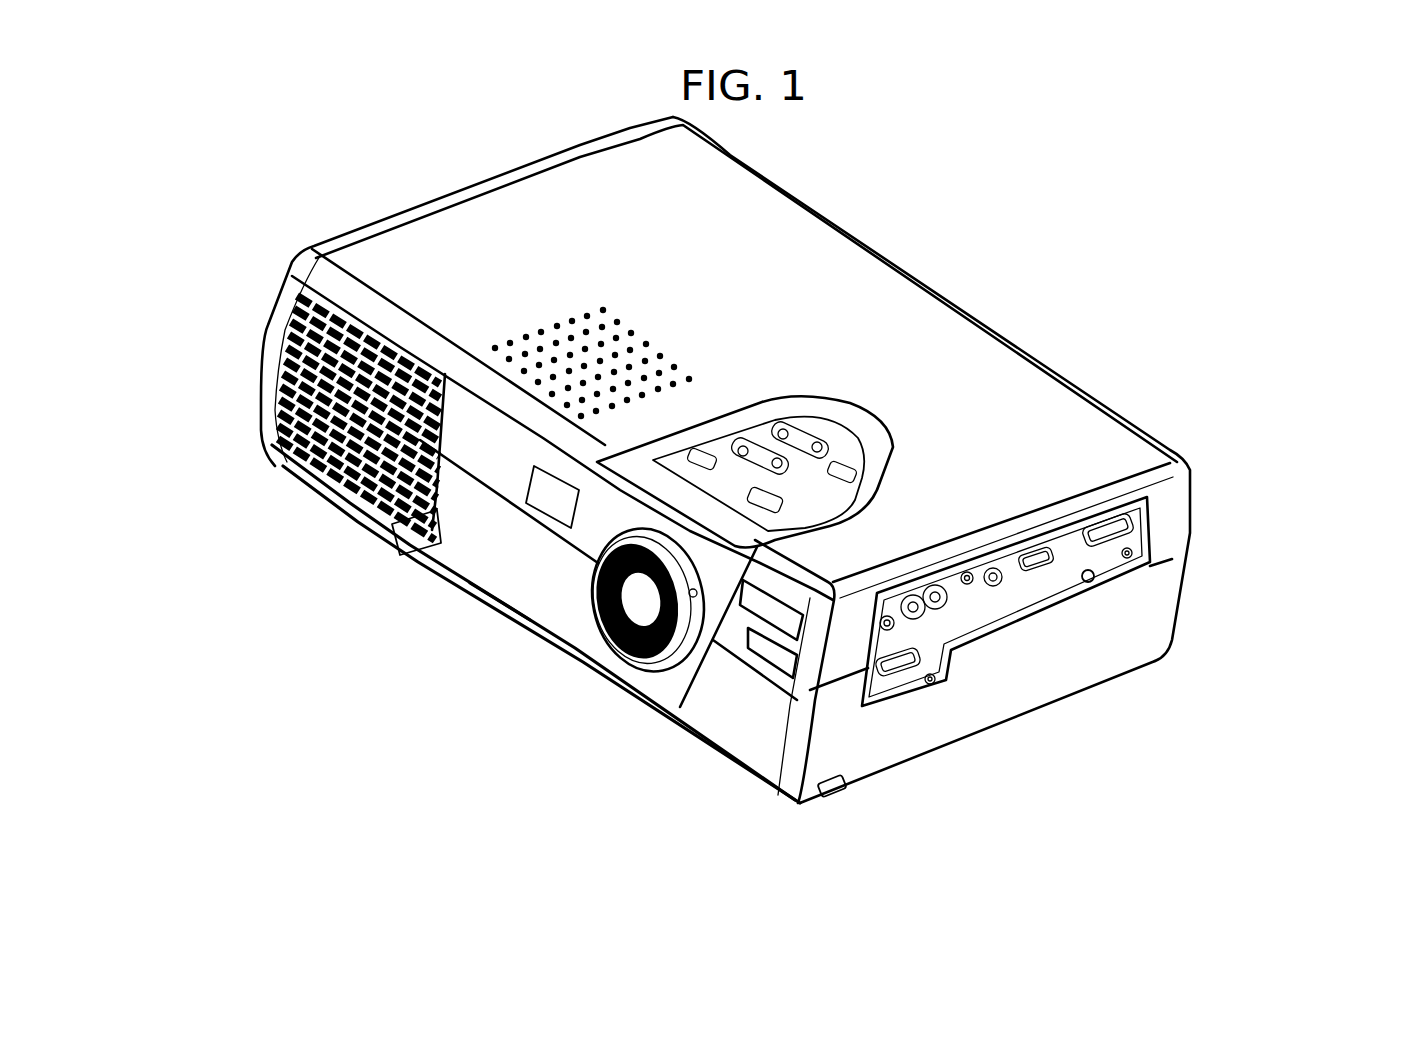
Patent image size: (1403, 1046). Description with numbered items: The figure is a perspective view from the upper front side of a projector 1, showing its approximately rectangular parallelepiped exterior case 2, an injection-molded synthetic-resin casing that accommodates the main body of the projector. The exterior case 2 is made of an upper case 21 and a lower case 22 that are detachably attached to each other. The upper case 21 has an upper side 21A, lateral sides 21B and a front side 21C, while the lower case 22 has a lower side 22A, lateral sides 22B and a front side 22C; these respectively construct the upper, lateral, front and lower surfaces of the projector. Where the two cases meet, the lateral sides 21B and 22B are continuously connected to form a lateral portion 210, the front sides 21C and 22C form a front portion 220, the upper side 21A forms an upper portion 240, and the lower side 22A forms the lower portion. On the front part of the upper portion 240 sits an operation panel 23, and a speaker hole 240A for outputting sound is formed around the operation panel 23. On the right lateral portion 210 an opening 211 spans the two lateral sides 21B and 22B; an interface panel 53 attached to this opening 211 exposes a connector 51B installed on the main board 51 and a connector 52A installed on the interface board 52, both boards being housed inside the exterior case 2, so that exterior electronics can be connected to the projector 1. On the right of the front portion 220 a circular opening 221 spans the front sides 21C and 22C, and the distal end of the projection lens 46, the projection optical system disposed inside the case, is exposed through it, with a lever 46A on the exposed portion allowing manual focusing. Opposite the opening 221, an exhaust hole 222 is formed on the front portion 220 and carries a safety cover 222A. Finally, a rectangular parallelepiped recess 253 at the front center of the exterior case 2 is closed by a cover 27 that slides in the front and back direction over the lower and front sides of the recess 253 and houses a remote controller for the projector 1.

The projector 1 is at (1018, 213).
The exterior case 2 is at (1247, 470).
The upper case 21 is at (1173, 502).
The upper side 21A is at (775, 210).
The lateral sides 21B is at (845, 678).
The front side 21C is at (462, 452).
The lower case 22 is at (1173, 572).
The lower side 22A is at (962, 745).
The lateral sides 22B is at (760, 777).
The front side 22C is at (455, 520).
The operation panel 23 is at (828, 437).
The cover 27 is at (500, 604).
The projection lens 46 is at (633, 637).
The lever 46A is at (634, 645).
The main board 51 is at (1053, 556).
The connector 51B is at (1130, 502).
The interface board 52 is at (910, 738).
The connector 52A is at (900, 673).
The interface panel 53 is at (1088, 570).
The lateral portion 210 is at (746, 714).
The opening 211 is at (1050, 600).
The front portion 220 is at (404, 528).
The circular opening 221 is at (590, 548).
The exhaust hole 222 is at (339, 418).
The safety cover 222A is at (340, 490).
The upper portion 240 is at (706, 307).
The speaker hole 240A is at (543, 331).
The recess 253 is at (403, 547).